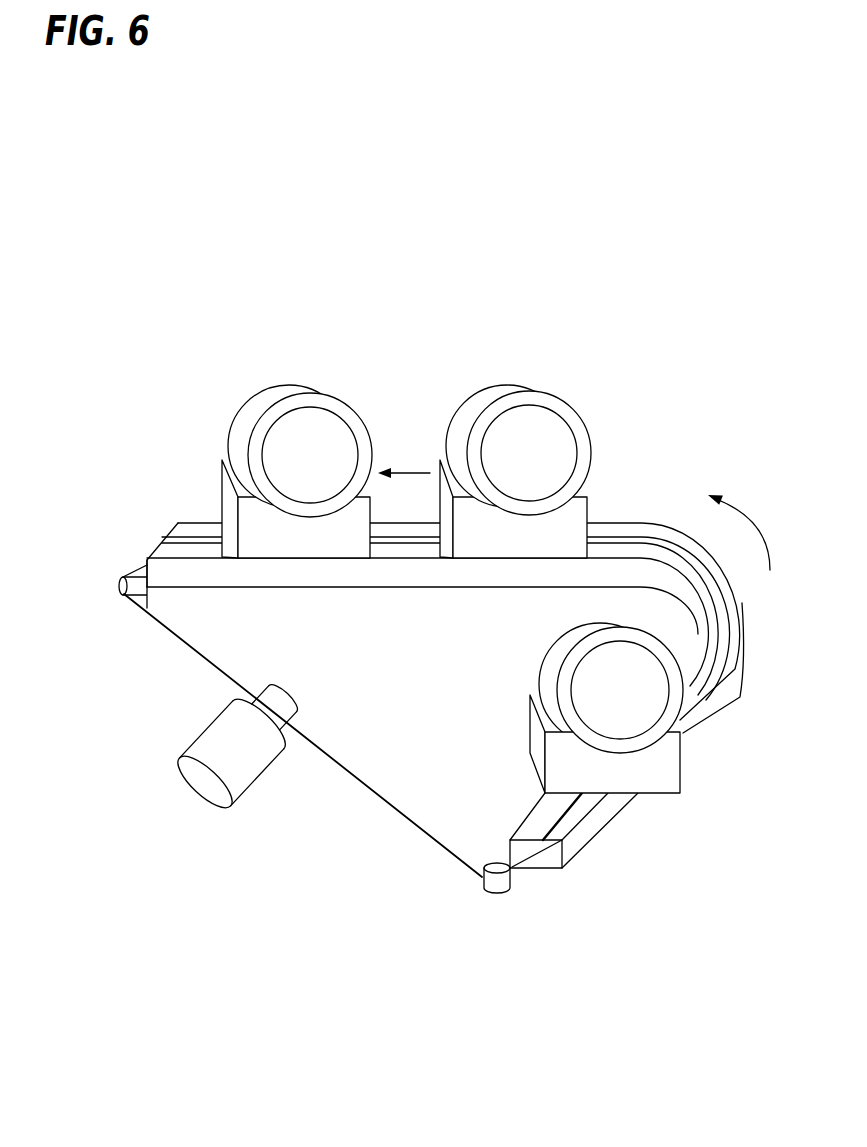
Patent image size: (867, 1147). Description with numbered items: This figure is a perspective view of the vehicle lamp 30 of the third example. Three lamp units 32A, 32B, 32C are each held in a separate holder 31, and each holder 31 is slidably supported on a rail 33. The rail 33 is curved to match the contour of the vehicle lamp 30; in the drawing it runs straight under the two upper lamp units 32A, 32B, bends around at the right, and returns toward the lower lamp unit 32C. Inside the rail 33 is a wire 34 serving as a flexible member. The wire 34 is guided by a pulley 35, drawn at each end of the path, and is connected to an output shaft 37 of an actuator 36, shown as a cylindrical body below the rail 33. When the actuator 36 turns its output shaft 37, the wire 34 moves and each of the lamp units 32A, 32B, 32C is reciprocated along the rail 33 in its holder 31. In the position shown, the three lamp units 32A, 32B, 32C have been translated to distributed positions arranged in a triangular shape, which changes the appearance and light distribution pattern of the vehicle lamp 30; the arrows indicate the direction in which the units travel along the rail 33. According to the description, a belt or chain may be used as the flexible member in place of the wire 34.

The vehicle lamp 30 is at (436, 278).
The holder 31 is at (222, 494).
The lamp unit 32A is at (302, 387).
The lamp unit 32B is at (538, 385).
The lamp unit 32C is at (540, 652).
The rail 33 is at (370, 590).
The wire 34 is at (352, 780).
The pulley 35 is at (124, 609).
The actuator 36 is at (196, 790).
The output shaft 37 is at (287, 690).